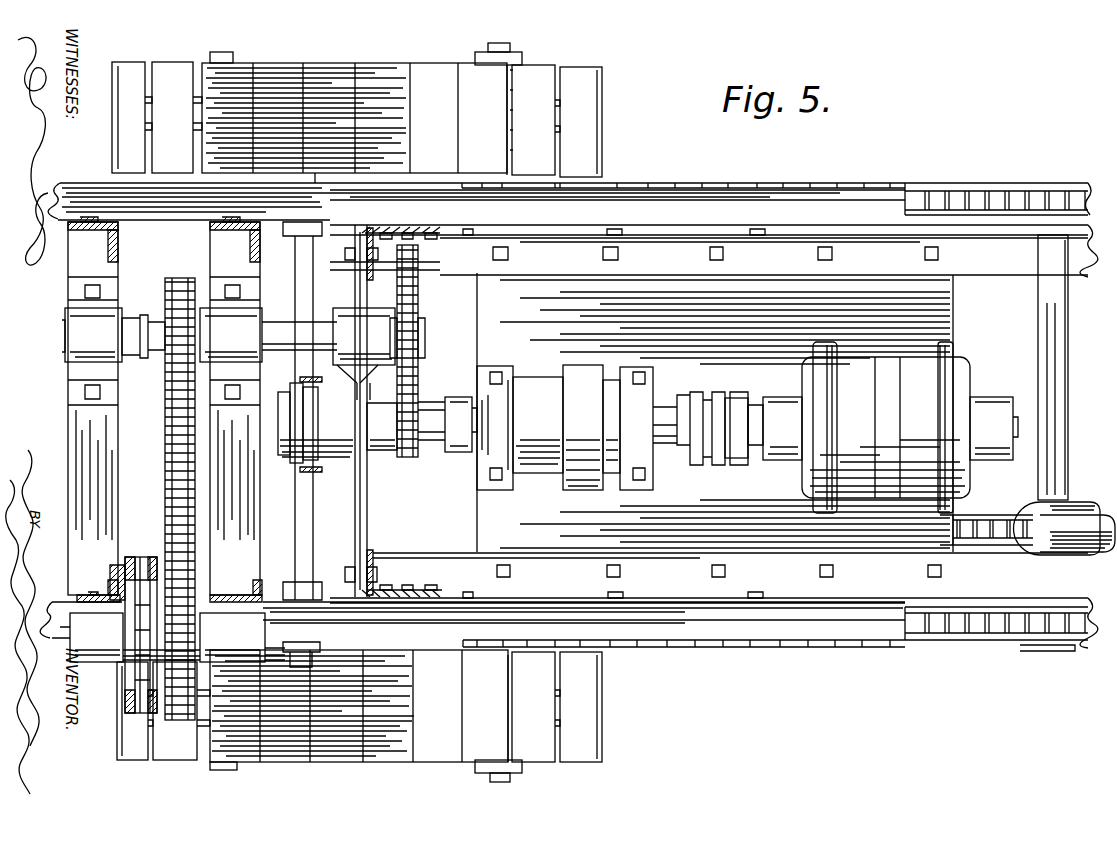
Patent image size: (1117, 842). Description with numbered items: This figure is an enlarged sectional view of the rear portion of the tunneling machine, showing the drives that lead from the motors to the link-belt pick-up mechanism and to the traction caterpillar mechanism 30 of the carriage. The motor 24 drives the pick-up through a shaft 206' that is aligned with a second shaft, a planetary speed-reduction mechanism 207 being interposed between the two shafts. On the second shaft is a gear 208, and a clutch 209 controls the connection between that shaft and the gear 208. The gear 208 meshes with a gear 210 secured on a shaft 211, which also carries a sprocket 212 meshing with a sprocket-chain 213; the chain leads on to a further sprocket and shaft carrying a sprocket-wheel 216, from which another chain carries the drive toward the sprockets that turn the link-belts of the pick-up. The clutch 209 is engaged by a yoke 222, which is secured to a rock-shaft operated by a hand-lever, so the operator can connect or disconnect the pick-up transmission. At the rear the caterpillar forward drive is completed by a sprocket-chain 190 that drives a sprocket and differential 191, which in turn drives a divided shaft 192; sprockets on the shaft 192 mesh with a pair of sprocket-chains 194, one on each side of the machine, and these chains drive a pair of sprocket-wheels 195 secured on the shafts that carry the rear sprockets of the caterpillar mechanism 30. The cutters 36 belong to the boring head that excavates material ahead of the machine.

The traction caterpillar mechanism 30 is at (346, 58).
The cutters 36 is at (336, 760).
The motor 24 is at (910, 427).
The sprocket-chain 190 is at (990, 522).
The sprocket and differential 191 is at (1070, 523).
The divided shaft 192 is at (1046, 366).
The sprocket-chains 194 is at (968, 632).
The sprocket-wheels 195 is at (540, 648).
The shaft 206' is at (763, 399).
The planetary speed-reduction mechanism 207 is at (560, 400).
The gear 208 is at (414, 452).
The clutch 209 is at (280, 448).
The gear 210 is at (416, 382).
The shaft 211 is at (273, 336).
The sprocket 212 is at (92, 364).
The sprocket-chain 213 is at (170, 455).
The sprocket-wheel 216 is at (139, 611).
The yoke 222 is at (310, 474).